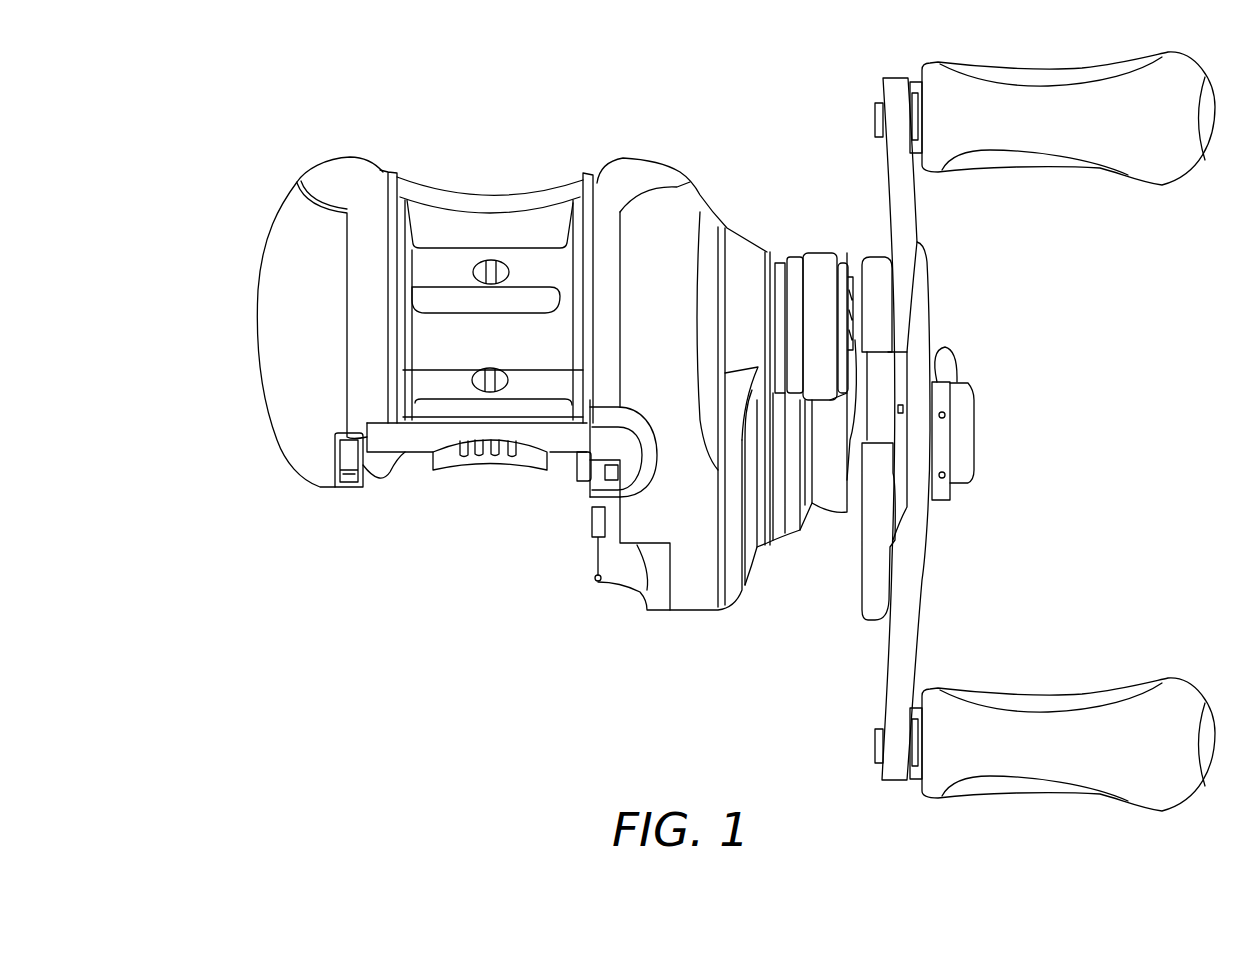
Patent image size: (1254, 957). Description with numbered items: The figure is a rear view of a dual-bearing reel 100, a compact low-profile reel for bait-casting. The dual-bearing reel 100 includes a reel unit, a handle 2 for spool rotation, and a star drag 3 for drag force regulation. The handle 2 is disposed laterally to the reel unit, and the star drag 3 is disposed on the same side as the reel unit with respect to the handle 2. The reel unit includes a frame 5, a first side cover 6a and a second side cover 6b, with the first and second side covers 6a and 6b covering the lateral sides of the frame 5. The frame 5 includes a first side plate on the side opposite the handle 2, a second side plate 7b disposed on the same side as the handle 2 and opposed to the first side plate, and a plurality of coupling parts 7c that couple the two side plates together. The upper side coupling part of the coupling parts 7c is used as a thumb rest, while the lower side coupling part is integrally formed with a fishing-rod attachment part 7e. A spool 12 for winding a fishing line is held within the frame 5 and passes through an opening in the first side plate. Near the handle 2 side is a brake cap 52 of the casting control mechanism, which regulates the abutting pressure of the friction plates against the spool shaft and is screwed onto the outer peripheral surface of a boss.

The dual-bearing reel 100 is at (1045, 389).
The handle 2 is at (920, 218).
The star drag 3 is at (875, 257).
The frame 5 is at (354, 158).
The first side cover 6a is at (256, 278).
The second side cover 6b is at (733, 592).
The second side plate 7b is at (583, 487).
The coupling parts 7c is at (415, 441).
The fishing-rod attachment part 7e is at (488, 465).
The spool 12 is at (424, 381).
The brake cap 52 is at (820, 260).